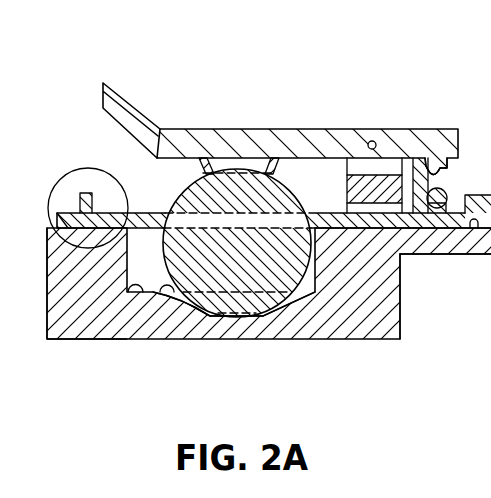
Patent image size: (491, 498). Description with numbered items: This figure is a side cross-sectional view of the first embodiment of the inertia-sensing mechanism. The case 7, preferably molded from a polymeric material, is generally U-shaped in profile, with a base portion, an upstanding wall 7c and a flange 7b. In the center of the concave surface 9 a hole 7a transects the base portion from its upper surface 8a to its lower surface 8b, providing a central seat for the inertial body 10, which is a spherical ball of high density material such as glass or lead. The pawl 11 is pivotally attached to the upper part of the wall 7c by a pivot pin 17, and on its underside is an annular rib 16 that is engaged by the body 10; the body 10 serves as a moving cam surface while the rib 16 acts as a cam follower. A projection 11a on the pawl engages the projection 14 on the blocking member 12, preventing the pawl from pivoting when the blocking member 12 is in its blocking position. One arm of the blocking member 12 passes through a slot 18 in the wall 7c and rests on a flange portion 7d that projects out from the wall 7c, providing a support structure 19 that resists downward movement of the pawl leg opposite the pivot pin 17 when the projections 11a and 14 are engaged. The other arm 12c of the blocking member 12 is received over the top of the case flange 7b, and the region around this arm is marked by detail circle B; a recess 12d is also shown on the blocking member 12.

The case 7 is at (318, 328).
The hole 7a is at (245, 323).
The flange 7b is at (60, 288).
The upstanding wall 7c is at (393, 290).
The flange portion 7d is at (472, 256).
The upper surface 8a is at (118, 295).
The lower surface 8b is at (203, 320).
The concave surface 9 is at (162, 293).
The inertial body 10 is at (208, 272).
The pawl 11 is at (270, 137).
The projection 11a is at (425, 166).
The blocking member 12 is at (327, 213).
The arm 12c is at (133, 197).
The recess 12d is at (412, 168).
The projection 14 is at (446, 200).
The annular rib 16 is at (174, 158).
The pivot pin 17 is at (372, 141).
The slot 18 is at (371, 208).
The support structure 19 is at (440, 242).
The detail circle B is at (70, 172).